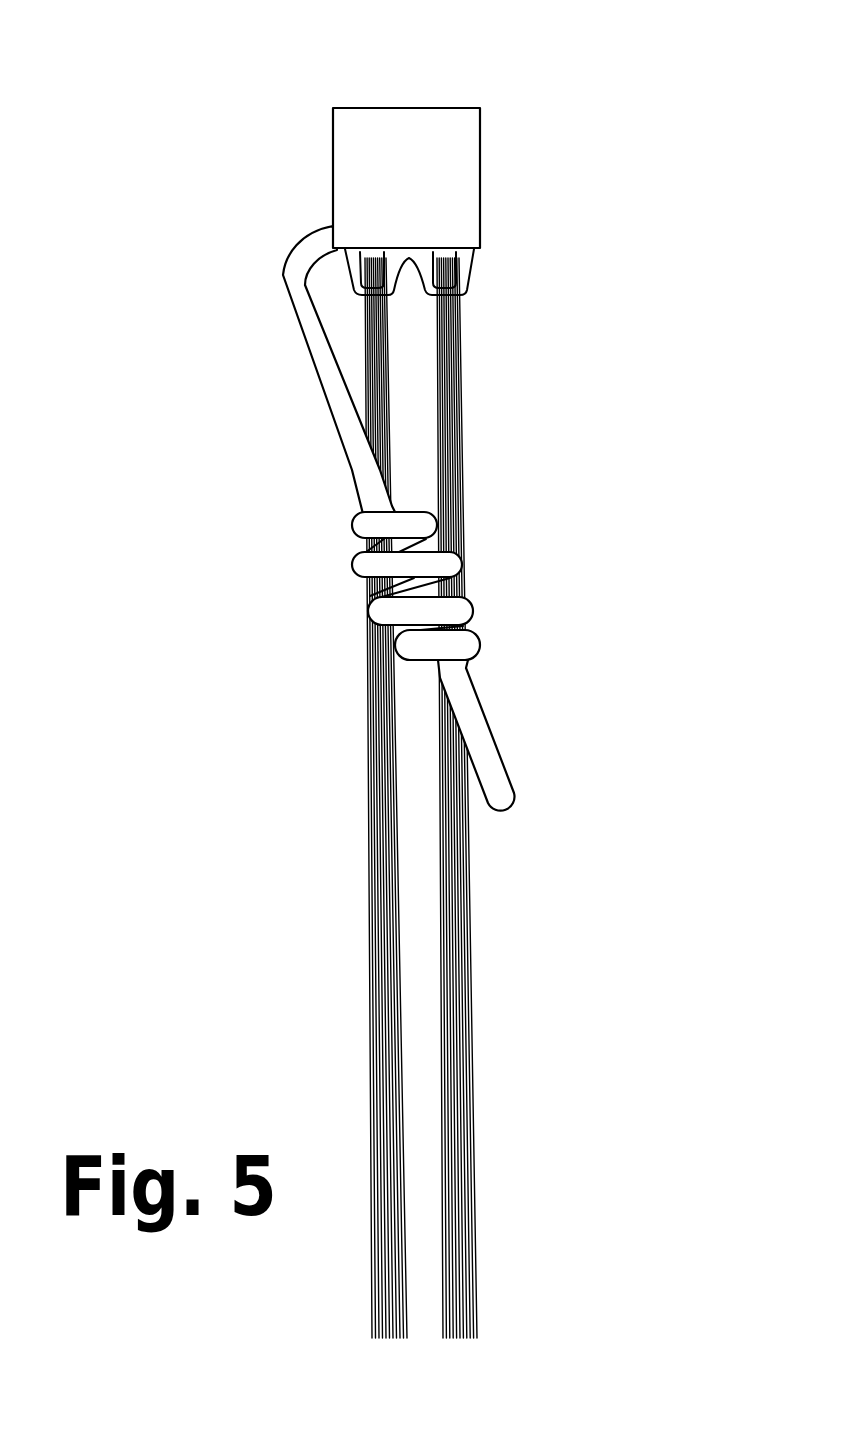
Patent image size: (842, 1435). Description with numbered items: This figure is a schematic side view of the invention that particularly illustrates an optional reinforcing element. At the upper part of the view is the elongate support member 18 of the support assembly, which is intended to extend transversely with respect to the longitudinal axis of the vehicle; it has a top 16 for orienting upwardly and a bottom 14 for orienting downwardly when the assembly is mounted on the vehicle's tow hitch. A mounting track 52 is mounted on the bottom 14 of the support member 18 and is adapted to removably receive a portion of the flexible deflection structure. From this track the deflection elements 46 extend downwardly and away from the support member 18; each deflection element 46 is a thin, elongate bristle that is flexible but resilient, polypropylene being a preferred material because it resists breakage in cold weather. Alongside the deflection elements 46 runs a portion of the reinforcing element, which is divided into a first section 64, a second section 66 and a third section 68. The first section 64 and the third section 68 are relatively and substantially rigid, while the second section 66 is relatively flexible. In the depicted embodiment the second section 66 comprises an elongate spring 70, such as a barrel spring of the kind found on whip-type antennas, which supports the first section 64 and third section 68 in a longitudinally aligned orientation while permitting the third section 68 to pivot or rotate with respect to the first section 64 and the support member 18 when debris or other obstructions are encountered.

The bottom 14 is at (491, 194).
The top 16 is at (410, 135).
The elongate support member 18 is at (445, 202).
The mounting track 52 is at (472, 267).
The deflection elements 46 is at (380, 1015).
The first section 64 is at (323, 372).
The second section 66 is at (343, 613).
The third section 68 is at (485, 757).
The elongate spring 70 is at (437, 562).